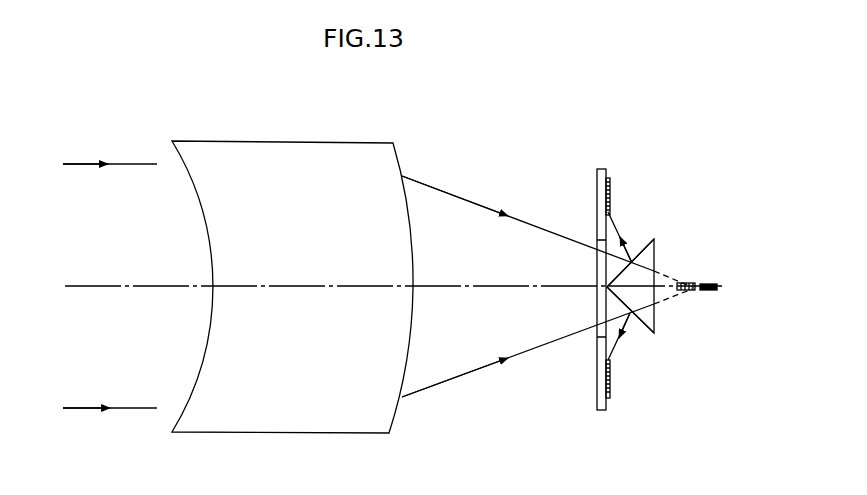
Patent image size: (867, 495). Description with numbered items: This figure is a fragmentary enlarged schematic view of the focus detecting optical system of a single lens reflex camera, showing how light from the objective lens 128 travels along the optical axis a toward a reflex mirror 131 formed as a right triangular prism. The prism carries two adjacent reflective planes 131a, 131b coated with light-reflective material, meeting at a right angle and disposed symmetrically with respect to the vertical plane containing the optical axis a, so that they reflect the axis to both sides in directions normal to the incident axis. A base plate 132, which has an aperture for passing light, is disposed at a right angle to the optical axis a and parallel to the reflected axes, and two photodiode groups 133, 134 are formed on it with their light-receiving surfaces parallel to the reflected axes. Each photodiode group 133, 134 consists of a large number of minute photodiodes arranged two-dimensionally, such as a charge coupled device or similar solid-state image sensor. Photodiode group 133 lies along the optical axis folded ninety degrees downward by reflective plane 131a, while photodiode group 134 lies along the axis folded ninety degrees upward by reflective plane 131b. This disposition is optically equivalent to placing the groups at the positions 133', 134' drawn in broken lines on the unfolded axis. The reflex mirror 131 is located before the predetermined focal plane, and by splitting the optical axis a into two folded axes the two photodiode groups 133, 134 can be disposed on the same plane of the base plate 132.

The optical axis a is at (86, 286).
The objective lens 128 is at (195, 140).
The reflex mirror 131 is at (657, 327).
The reflective plane 131a is at (638, 323).
The reflective plane 131b is at (640, 248).
The base plate 132 is at (596, 185).
The photodiode group 133 is at (640, 407).
The photodiode group 134 is at (647, 174).
The optically equivalent position of photodiode group 133 133' is at (737, 314).
The optically equivalent position of photodiode group 134 134' is at (720, 260).